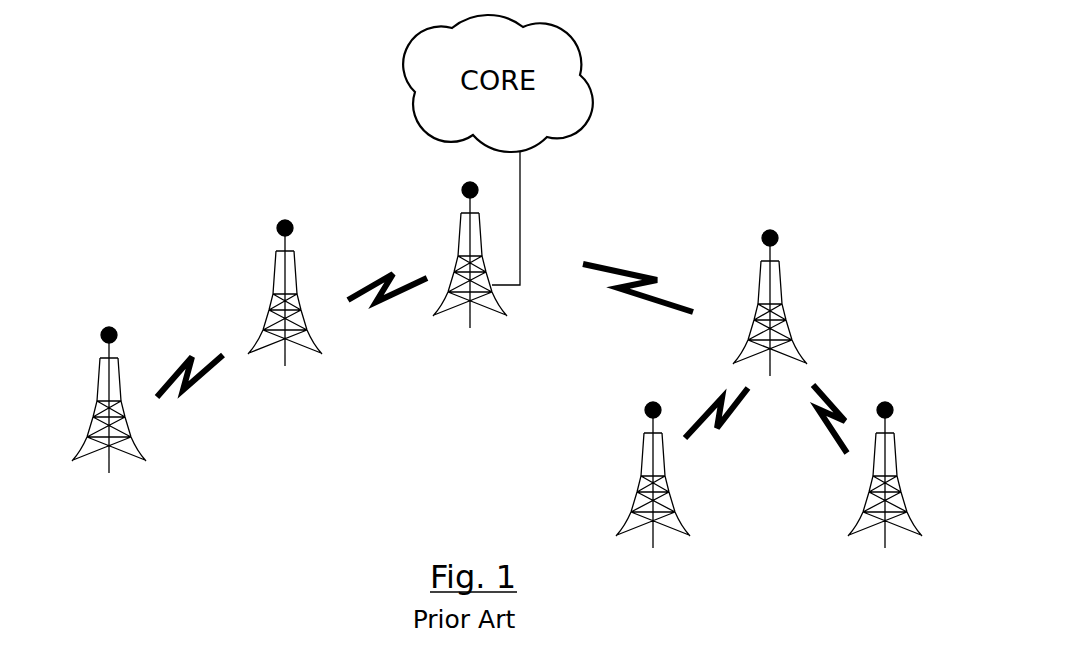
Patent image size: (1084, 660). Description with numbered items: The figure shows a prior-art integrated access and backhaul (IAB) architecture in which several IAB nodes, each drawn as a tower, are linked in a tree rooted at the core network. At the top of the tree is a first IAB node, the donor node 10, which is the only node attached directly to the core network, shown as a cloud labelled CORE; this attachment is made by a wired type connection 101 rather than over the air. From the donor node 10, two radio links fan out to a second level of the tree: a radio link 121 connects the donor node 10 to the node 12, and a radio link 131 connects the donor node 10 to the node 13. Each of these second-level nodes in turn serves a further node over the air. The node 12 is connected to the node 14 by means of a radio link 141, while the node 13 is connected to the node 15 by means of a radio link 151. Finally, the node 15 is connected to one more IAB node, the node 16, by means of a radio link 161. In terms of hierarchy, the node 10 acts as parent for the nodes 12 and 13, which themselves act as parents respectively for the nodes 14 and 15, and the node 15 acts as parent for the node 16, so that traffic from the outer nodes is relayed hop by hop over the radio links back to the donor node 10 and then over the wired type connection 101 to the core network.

The donor node 10 is at (463, 232).
The wired type connection 101 is at (520, 212).
The IAB node 12 is at (275, 277).
The radio link 121 is at (383, 273).
The IAB node 13 is at (783, 308).
The radio link 131 is at (632, 270).
The IAB node 14 is at (102, 383).
The radio link 141 is at (180, 357).
The IAB node 15 is at (642, 470).
The radio link 151 is at (725, 425).
The IAB node 16 is at (897, 480).
The radio link 161 is at (837, 400).